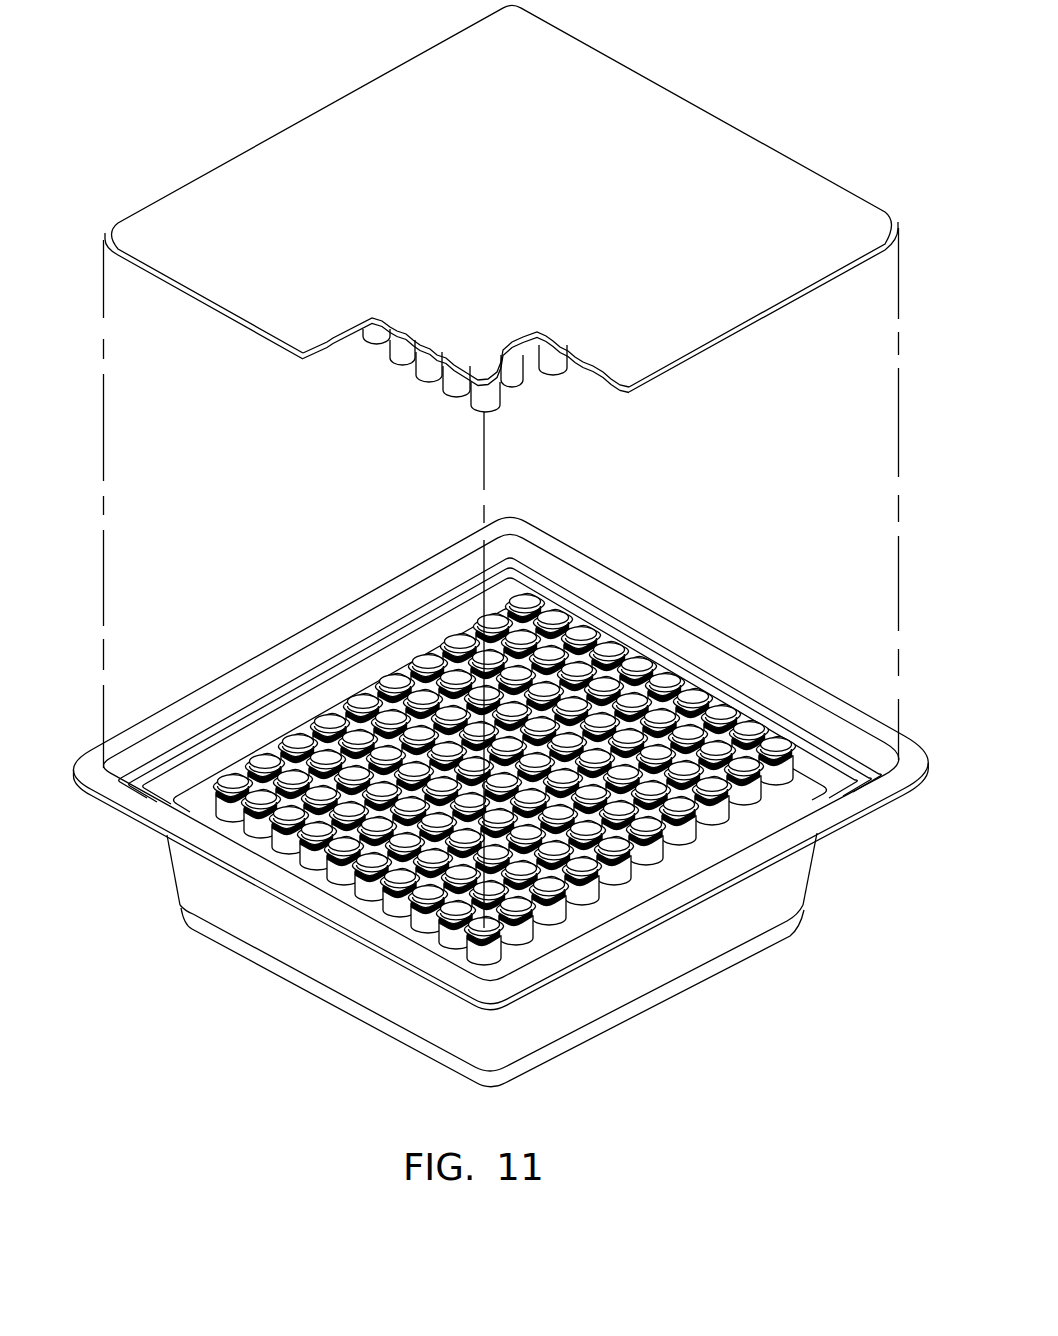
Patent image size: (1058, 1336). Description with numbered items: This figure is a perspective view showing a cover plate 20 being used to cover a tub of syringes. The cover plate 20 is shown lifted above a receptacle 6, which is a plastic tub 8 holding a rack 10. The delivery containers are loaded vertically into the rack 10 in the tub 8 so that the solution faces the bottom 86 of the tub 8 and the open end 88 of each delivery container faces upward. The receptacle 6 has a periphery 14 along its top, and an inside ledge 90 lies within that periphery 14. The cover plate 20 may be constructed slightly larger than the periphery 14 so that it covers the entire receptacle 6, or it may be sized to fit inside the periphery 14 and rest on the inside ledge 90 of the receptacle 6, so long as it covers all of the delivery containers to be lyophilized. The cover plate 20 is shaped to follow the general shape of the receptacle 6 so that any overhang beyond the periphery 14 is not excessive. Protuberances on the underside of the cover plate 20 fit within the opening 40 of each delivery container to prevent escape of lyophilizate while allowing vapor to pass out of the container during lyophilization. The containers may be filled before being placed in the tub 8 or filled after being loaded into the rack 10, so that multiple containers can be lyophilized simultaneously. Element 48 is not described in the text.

The cover plate 20 is at (703, 112).
The periphery 14 is at (790, 675).
The inside ledge 90 is at (324, 663).
The rack 10 is at (513, 965).
The opening 40 is at (318, 836).
The tube cap 48 is at (458, 896).
The open end 88 is at (552, 888).
The receptacle 6 is at (192, 884).
The plastic tub 8 is at (797, 868).
The bottom 86 is at (645, 1010).